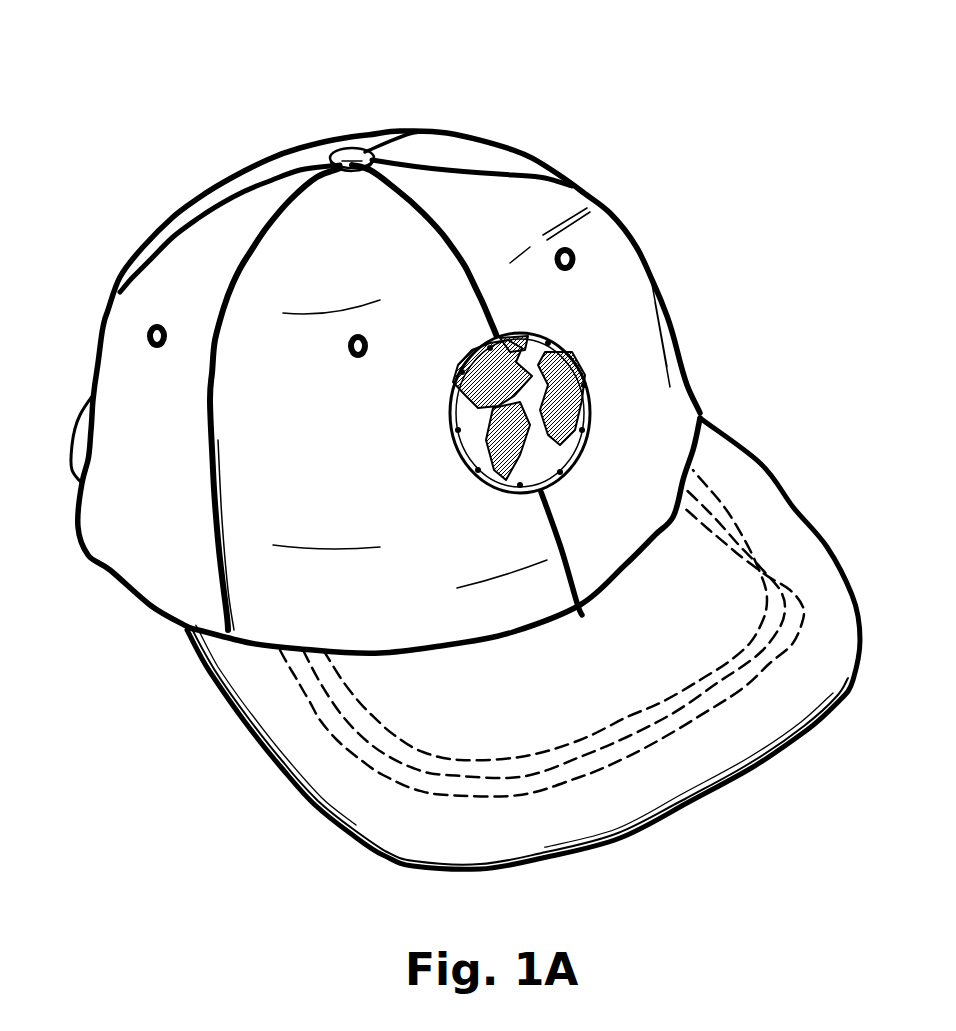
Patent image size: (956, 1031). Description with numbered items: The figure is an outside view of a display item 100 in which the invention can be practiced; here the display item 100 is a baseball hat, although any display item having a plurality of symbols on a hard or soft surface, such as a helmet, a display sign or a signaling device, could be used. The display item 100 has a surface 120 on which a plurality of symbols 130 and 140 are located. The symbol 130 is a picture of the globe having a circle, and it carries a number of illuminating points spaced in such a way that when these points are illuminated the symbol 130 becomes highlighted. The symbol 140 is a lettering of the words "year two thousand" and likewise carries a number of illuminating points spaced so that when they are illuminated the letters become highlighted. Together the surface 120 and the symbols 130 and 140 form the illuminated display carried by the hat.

The display item 100 is at (730, 136).
The surface 120 is at (620, 250).
The symbol 130 is at (575, 407).
The symbol 140 is at (712, 428).